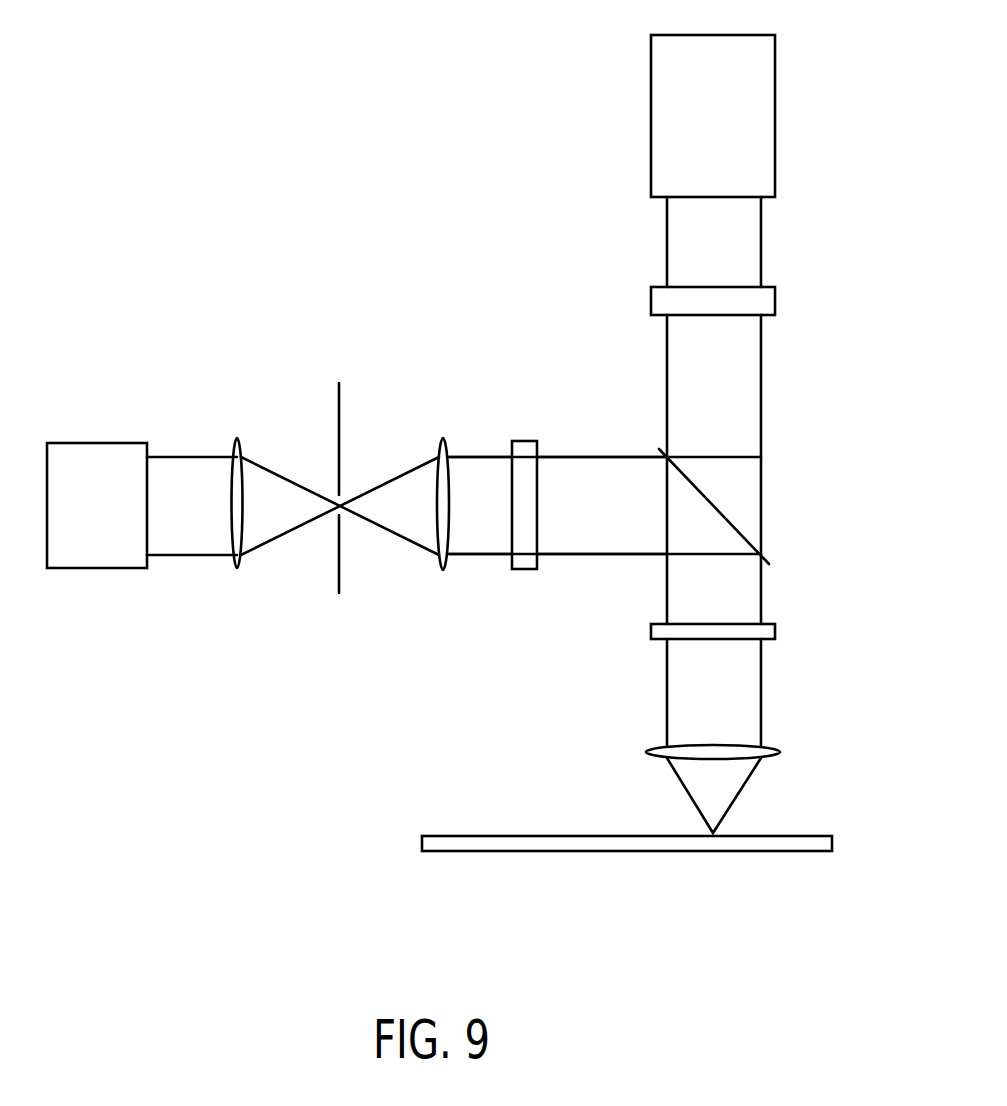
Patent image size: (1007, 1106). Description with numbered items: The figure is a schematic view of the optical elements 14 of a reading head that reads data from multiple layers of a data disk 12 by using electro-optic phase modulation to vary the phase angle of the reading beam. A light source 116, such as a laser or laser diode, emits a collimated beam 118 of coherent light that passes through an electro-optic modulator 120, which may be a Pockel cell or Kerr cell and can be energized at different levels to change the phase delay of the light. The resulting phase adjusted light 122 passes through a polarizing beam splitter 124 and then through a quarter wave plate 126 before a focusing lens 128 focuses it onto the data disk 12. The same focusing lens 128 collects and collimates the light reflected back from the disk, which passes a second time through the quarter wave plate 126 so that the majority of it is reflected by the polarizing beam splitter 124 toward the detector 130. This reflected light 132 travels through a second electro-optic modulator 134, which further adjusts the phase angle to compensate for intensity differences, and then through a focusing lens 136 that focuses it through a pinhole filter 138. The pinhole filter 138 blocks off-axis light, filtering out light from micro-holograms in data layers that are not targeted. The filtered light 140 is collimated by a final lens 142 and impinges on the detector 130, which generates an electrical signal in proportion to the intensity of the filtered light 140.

The data disk 12 is at (760, 835).
The optical elements 14 is at (166, 86).
The light source 116 is at (775, 120).
The collimated beam 118 is at (761, 248).
The electro-optic modulator 120 is at (775, 298).
The phase adjusted light 122 is at (761, 387).
The polarizing beam splitter 124 is at (761, 503).
The quarter wave plate 126 is at (775, 631).
The focusing lens 128 is at (767, 748).
The detector 130 is at (97, 442).
The reflected light 132 is at (587, 555).
The second electro-optic modulator 134 is at (530, 440).
The focusing lens 136 is at (440, 450).
The pinhole filter 138 is at (339, 607).
The filtered light 140 is at (273, 540).
The final lens 142 is at (237, 438).